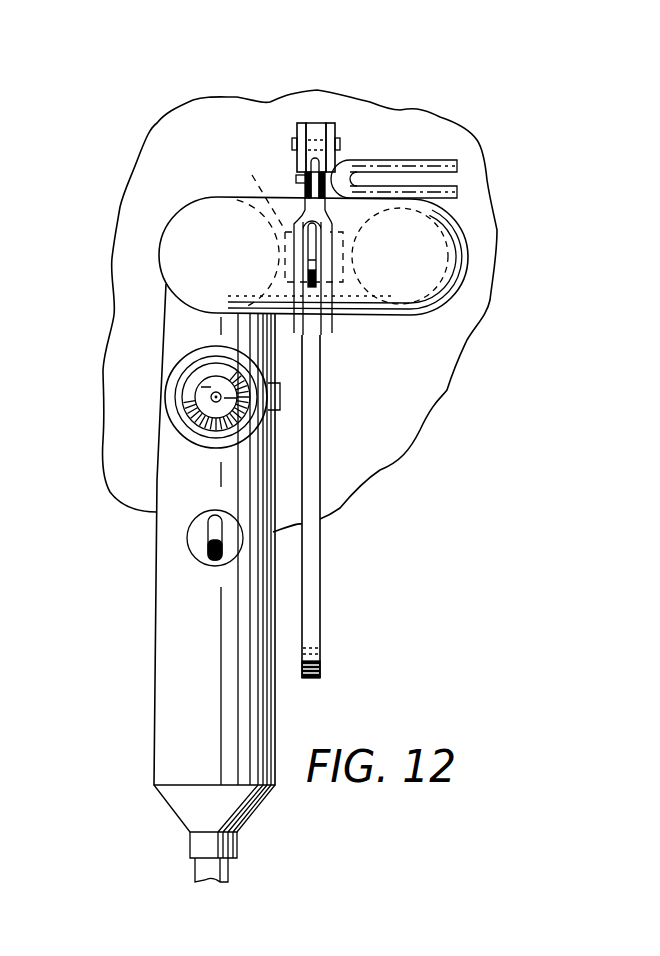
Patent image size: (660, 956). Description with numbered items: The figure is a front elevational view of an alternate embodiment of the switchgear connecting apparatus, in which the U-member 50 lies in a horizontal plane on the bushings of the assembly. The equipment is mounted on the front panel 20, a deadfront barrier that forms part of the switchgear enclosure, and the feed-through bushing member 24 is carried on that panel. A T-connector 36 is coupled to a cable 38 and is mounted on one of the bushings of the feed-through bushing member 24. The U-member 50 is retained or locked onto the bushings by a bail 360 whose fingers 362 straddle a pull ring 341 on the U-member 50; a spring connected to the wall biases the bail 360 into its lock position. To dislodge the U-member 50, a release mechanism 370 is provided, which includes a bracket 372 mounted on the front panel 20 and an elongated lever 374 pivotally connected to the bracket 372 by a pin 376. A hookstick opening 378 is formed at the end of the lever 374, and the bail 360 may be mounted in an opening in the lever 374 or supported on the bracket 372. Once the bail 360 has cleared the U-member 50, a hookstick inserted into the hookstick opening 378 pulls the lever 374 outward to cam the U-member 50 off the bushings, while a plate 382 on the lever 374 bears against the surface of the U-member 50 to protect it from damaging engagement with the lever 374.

The front panel 20 is at (433, 392).
The feed-through bushing member 24 is at (166, 333).
The T-connector 36 is at (153, 708).
The cable 38 is at (230, 868).
The U-member 50 is at (474, 256).
The pull ring 341 is at (316, 280).
The bail 360 is at (302, 170).
The fingers 362 is at (477, 183).
The release mechanism 370 is at (290, 120).
The bracket 372 is at (333, 123).
The lever 374 is at (320, 585).
The pin 376 is at (341, 146).
The hookstick opening 378 is at (322, 651).
The plate 382 is at (258, 197).